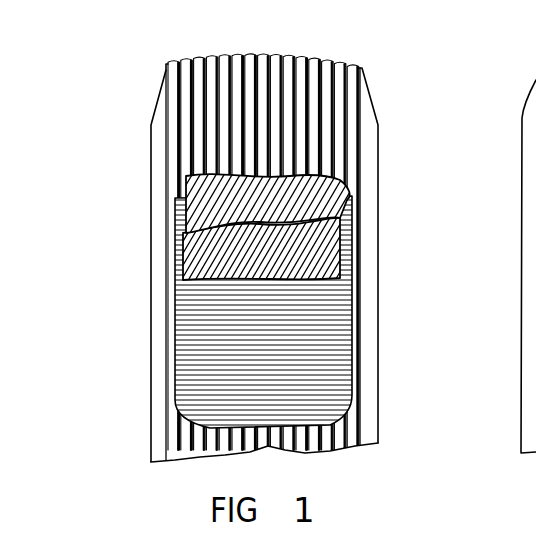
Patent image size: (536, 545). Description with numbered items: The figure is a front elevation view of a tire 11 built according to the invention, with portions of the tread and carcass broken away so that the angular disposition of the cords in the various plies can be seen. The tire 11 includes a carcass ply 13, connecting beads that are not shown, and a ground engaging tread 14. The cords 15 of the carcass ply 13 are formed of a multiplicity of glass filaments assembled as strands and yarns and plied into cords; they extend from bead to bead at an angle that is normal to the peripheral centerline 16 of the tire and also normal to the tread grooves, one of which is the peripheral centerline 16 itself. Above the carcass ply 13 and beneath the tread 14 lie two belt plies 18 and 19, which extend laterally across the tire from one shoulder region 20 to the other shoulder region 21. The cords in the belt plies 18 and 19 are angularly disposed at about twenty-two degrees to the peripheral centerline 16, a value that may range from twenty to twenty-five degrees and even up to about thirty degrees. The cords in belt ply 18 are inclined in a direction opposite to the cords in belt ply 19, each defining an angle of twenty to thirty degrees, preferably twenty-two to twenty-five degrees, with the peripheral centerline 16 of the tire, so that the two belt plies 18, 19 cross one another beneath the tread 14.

The tire 11 is at (148, 162).
The carcass ply 13 is at (324, 329).
The ground engaging tread 14 is at (306, 53).
The cords 15 is at (318, 367).
The peripheral centerline 16 is at (265, 54).
The belt ply 18 is at (190, 252).
The belt ply 19 is at (210, 212).
The shoulder region 20 is at (165, 85).
The shoulder region 21 is at (367, 92).